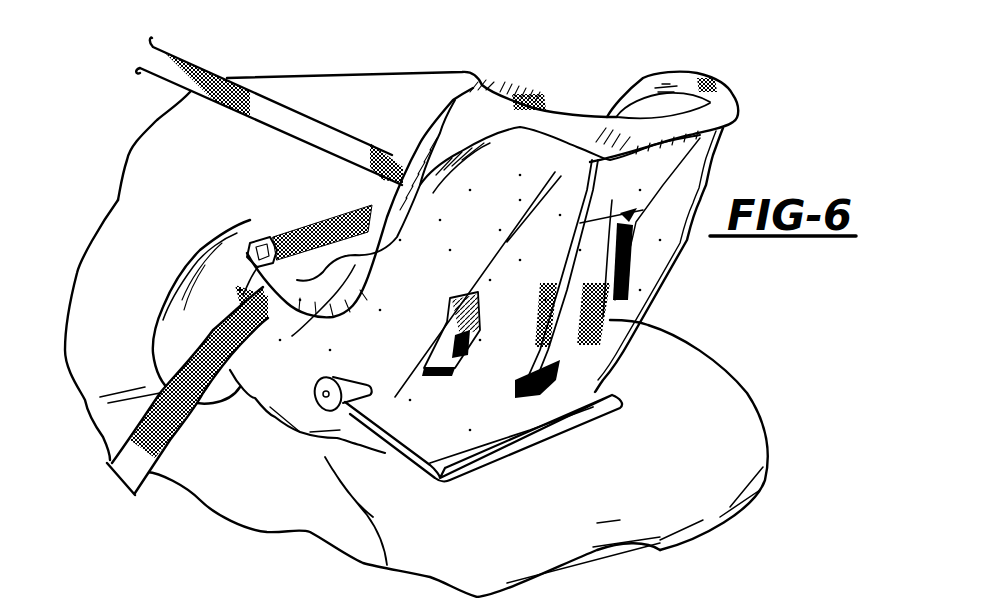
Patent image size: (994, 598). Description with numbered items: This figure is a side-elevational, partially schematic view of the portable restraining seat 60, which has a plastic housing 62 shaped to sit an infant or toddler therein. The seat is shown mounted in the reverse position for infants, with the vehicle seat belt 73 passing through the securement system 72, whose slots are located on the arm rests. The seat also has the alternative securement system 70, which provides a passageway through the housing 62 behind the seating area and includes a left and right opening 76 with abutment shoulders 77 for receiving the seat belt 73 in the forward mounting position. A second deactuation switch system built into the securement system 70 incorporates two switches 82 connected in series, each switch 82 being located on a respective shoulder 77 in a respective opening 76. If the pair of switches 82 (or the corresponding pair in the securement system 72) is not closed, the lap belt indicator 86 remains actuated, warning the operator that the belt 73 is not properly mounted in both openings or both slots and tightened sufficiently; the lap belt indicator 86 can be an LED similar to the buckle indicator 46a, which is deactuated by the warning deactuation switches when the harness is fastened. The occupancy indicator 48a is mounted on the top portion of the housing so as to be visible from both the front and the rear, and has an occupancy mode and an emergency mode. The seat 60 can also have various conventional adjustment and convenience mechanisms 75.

The portable restraining seat 60 is at (330, 63).
The plastic housing 62 is at (572, 112).
The lap belt indicator 86 is at (540, 100).
The occupancy indicator 48a is at (657, 82).
The buckle indicator 46a is at (713, 77).
The securement system 72 is at (250, 222).
The vehicle seat belt 73 is at (152, 348).
The securement system 70 is at (480, 372).
The opening 76 is at (652, 205).
The switch 82 is at (611, 215).
The abutment shoulder 77 is at (425, 360).
The adjustment and convenience mechanisms 75 is at (443, 476).